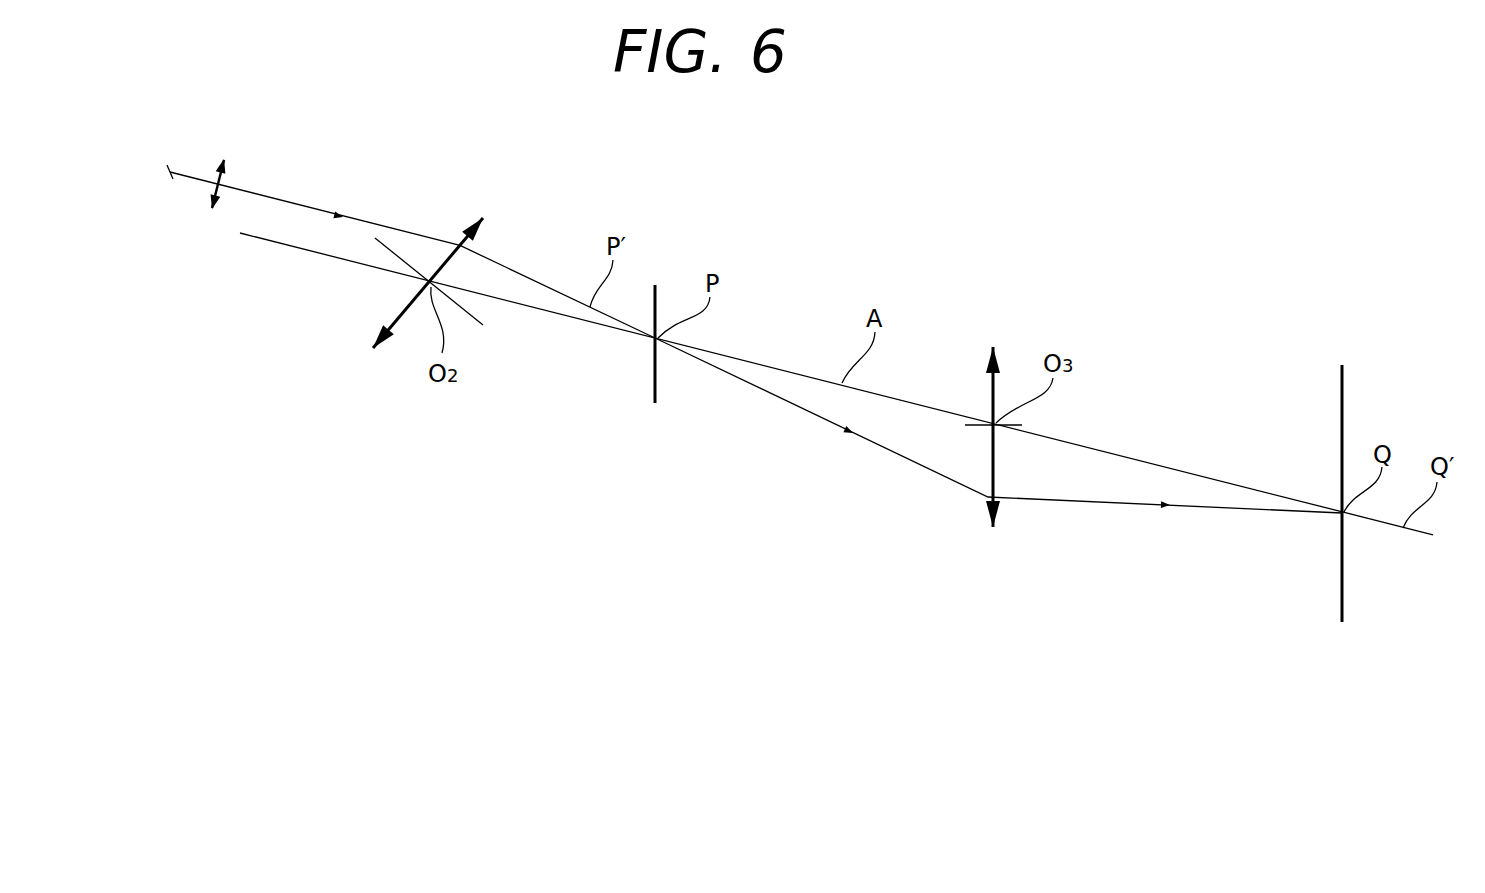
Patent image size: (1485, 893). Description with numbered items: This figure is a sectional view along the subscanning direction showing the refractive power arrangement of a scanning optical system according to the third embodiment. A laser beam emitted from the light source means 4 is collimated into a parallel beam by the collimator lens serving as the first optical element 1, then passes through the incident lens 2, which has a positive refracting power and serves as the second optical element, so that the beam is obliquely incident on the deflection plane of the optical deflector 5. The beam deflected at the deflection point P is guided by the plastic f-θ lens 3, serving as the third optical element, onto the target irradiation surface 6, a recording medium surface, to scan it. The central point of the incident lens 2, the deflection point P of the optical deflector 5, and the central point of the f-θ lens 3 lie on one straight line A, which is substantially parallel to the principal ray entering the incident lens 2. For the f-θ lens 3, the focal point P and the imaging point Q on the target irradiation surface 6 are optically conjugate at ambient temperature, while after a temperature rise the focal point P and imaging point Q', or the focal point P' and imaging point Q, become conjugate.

The first optical element 1 is at (232, 160).
The incident lens 2 is at (484, 216).
The f-θ lens 3 is at (994, 347).
The light source means 4 is at (172, 168).
The optical deflector 5 is at (657, 288).
The target irradiation surface 6 is at (1344, 378).